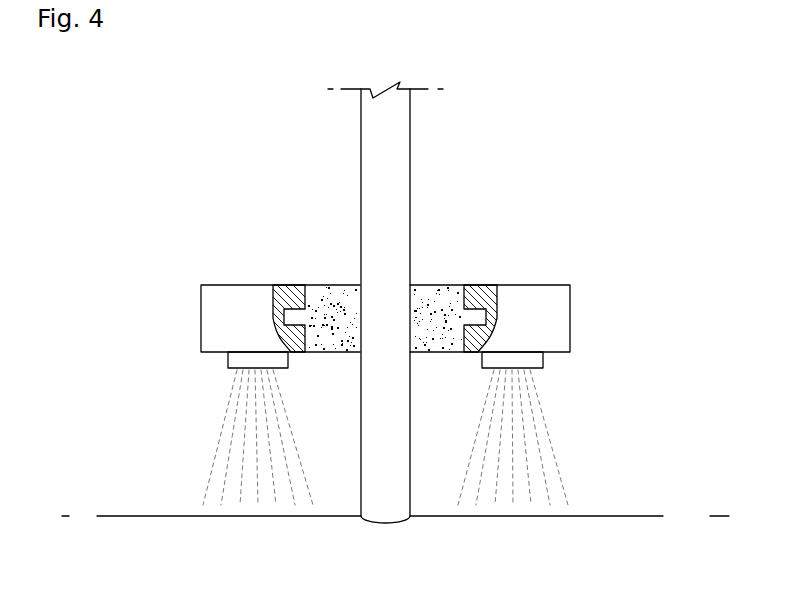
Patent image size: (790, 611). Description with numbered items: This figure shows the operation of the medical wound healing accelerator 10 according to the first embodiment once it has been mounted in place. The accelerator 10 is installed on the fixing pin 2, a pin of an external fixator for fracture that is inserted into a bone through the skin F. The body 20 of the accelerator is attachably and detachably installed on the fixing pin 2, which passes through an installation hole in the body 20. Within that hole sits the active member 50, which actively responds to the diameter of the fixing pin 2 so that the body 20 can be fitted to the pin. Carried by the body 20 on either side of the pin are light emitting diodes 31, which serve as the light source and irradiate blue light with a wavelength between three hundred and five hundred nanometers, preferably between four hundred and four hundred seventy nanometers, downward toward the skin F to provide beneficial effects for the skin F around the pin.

The fixing pin 2 is at (380, 190).
The medical wound healing accelerator 10 is at (230, 227).
The body 20 is at (522, 285).
The light emitting diode (LED) 31 is at (242, 360).
The active member 50 is at (337, 285).
The skin F is at (143, 516).